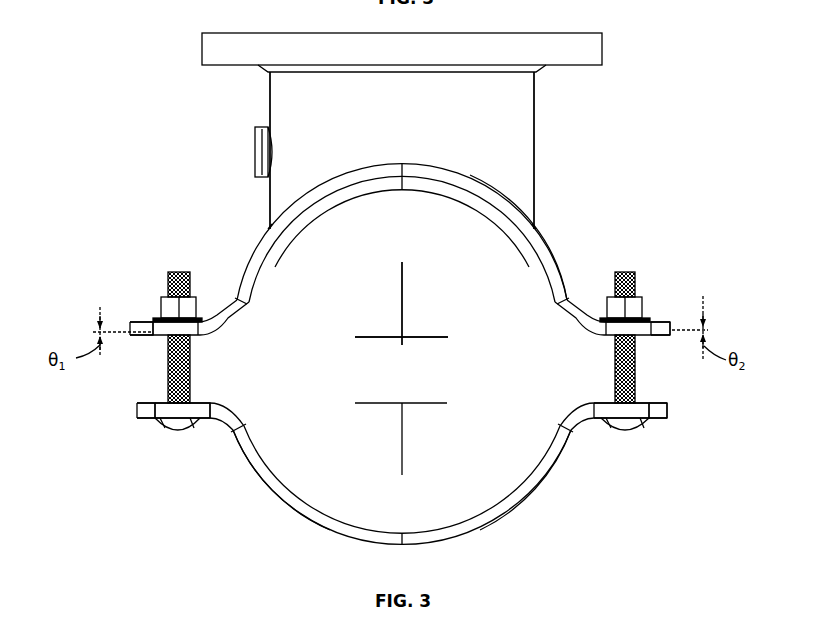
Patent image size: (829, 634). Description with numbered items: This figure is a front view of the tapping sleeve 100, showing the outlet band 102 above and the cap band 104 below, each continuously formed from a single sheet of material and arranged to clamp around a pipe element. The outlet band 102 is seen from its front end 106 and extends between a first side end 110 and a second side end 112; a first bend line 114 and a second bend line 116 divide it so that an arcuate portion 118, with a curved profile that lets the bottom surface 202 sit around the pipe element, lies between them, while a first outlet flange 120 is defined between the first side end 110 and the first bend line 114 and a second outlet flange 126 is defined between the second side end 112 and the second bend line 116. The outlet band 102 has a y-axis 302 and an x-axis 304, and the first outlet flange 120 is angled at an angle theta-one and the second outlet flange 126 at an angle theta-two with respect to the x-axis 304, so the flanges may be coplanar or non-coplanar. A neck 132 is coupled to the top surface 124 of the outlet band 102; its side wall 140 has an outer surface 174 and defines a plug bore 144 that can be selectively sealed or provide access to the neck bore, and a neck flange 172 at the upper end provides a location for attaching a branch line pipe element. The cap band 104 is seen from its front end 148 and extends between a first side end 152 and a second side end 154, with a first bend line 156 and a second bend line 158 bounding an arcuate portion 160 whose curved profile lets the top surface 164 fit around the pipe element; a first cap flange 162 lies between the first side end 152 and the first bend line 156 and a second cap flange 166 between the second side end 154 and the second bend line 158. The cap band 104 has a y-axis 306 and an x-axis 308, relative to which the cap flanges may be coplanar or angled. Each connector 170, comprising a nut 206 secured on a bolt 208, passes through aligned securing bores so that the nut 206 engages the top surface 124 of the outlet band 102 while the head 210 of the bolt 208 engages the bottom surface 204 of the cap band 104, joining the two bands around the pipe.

The tapping sleeve 100 is at (184, 17).
The outlet band 102 is at (397, 258).
The cap band 104 is at (402, 459).
The front end 106 is at (522, 243).
The first side end 110 is at (128, 322).
The second side end 112 is at (674, 324).
The first bend line 114 is at (228, 324).
The second bend line 116 is at (574, 330).
The arcuate portion 118 is at (478, 204).
The first outlet flange 120 is at (150, 320).
The top surface 124 is at (558, 250).
The second outlet flange 126 is at (646, 320).
The neck 132 is at (534, 100).
The side wall 140 is at (534, 130).
The plug bore 144 is at (252, 152).
The front end 148 is at (438, 540).
The first side end 152 is at (140, 410).
The second side end 154 is at (668, 412).
The first bend line 156 is at (234, 406).
The second bend line 158 is at (570, 406).
The arcuate portion 160 is at (512, 516).
The first cap flange 162 is at (200, 404).
The top surface 164 is at (300, 490).
The second cap flange 166 is at (598, 404).
The connector 170 is at (178, 434).
The neck flange 172 is at (532, 33).
The outer surface 174 is at (273, 110).
The bottom surface 202 is at (397, 258).
The bottom surface 204 is at (402, 459).
The nut 206 is at (186, 304).
The bolt 208 is at (178, 272).
The head 210 is at (162, 424).
The y-axis 302 is at (400, 292).
The x-axis 304 is at (410, 338).
The y-axis 306 is at (400, 413).
The x-axis 308 is at (430, 404).